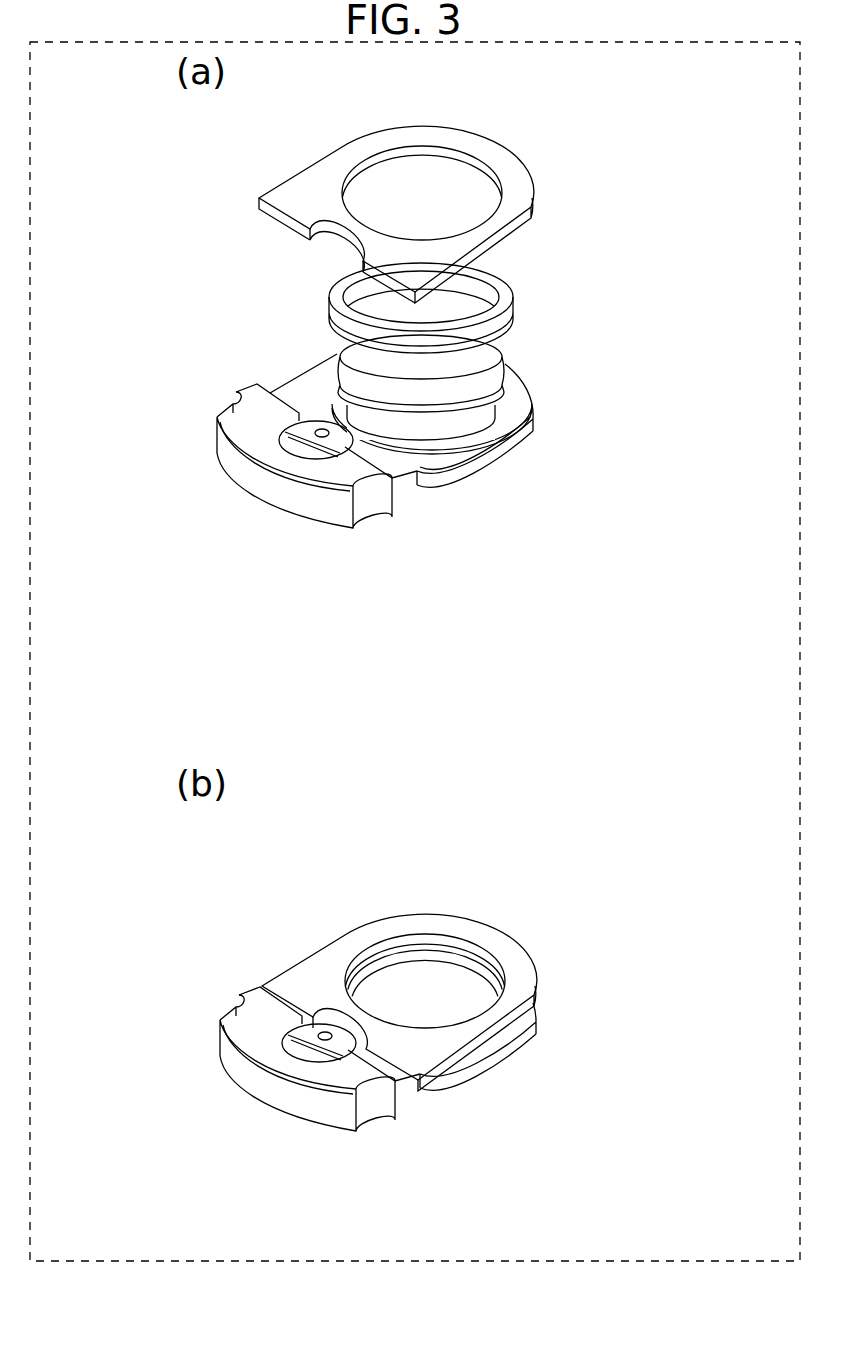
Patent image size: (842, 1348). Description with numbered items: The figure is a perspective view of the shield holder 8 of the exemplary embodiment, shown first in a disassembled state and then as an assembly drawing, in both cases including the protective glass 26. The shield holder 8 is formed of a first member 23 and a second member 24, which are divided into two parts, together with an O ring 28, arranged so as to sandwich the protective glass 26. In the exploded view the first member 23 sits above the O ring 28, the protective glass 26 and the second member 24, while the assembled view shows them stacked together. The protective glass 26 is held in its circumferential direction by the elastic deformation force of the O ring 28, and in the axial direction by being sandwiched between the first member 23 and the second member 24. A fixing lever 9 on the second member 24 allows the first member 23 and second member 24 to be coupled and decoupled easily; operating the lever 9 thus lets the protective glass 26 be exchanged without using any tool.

The shield holder 8 is at (218, 143).
The fixing lever 9 is at (337, 443).
The first member 23 is at (514, 185).
The second member 24 is at (510, 425).
The protective glass 26 is at (487, 355).
The O ring 28 is at (506, 290).